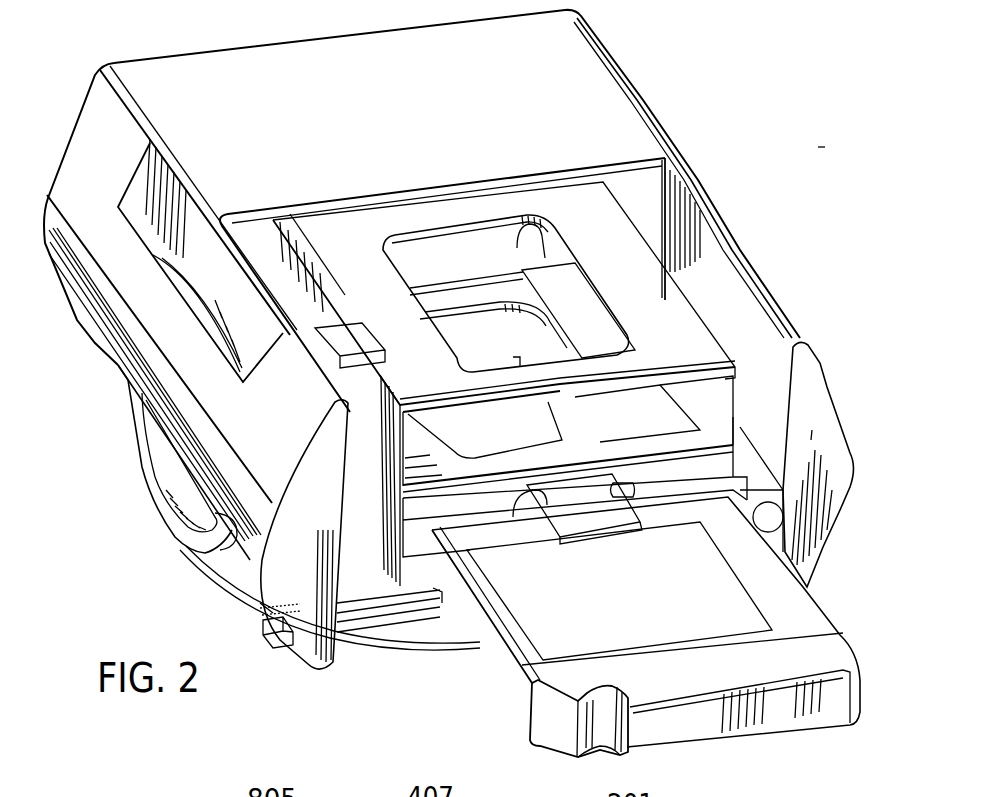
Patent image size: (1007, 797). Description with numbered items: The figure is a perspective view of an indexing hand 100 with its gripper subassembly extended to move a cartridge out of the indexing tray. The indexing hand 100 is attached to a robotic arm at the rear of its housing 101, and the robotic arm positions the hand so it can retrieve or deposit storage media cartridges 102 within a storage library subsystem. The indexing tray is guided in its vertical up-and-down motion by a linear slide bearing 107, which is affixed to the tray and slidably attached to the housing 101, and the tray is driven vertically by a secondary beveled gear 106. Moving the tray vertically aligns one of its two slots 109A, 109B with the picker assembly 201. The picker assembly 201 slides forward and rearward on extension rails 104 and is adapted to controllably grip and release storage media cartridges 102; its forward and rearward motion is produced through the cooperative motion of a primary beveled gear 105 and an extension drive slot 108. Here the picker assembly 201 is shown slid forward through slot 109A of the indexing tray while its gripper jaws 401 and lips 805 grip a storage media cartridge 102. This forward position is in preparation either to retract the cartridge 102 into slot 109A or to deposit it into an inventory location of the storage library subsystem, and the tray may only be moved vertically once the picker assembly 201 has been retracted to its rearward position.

The indexing hand 100 is at (662, 70).
The housing 101 is at (250, 52).
The storage media cartridge 102 is at (767, 713).
The extension rails 104 is at (540, 238).
The primary beveled gear 105 is at (227, 572).
The secondary beveled gear 106 is at (143, 463).
The linear slide bearing 107 is at (350, 327).
The extension drive slot 108 is at (265, 628).
The slot 109A is at (430, 535).
The slot 109B is at (397, 463).
The picker assembly 201 is at (766, 446).
The gripper jaws 401 is at (627, 427).
The lips 805 is at (607, 518).